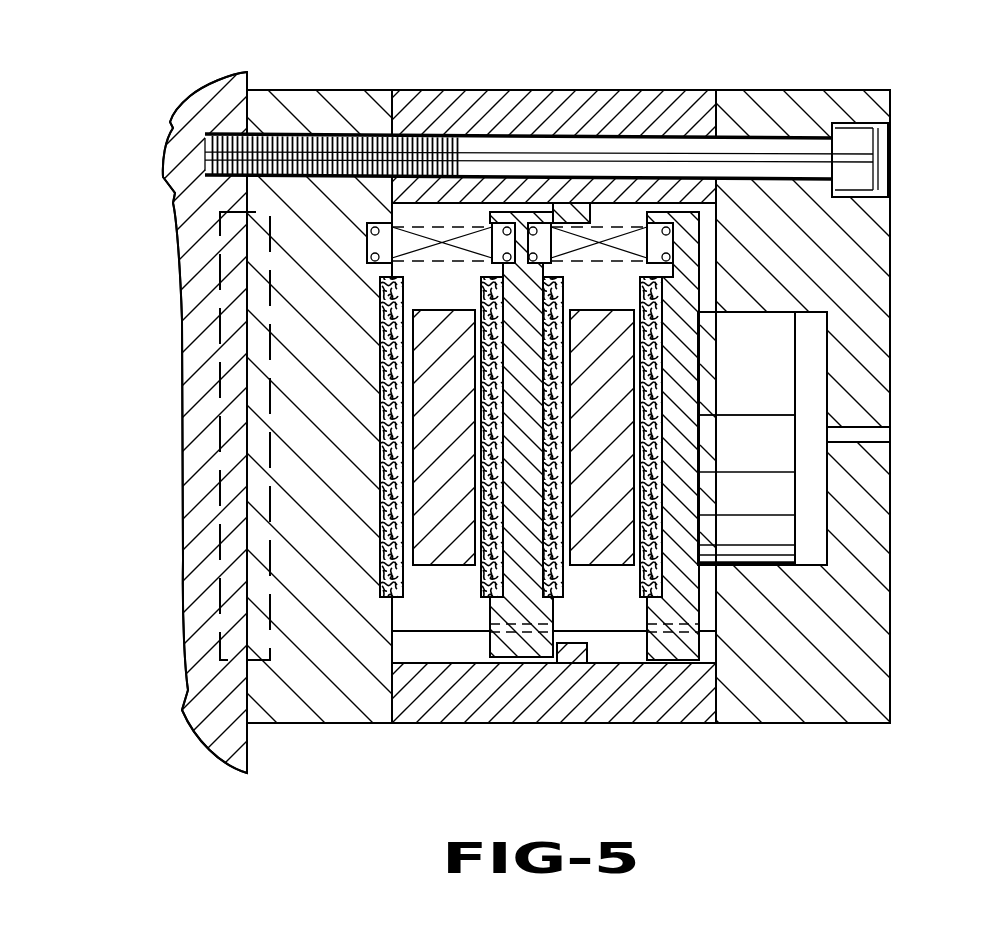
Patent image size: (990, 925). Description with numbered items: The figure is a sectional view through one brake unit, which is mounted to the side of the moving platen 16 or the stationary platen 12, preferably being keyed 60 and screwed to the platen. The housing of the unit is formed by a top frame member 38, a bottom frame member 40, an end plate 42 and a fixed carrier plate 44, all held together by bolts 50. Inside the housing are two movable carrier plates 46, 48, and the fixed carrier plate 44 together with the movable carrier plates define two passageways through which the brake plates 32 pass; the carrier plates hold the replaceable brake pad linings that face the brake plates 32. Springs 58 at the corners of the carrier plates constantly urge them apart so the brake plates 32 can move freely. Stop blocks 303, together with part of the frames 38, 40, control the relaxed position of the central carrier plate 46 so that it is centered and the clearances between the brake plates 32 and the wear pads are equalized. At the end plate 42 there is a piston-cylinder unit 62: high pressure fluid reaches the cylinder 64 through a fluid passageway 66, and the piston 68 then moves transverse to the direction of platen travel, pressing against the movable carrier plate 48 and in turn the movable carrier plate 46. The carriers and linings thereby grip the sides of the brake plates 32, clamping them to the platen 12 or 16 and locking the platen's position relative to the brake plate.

The stationary platen 12 is at (205, 210).
The moving platen 16 is at (205, 210).
The brake plates 32 is at (441, 546).
The top frame member 38 is at (695, 107).
The bottom frame member 40 is at (700, 712).
The end plate 42 is at (863, 677).
The fixed carrier plate 44 is at (342, 703).
The movable carrier plate 46 is at (520, 650).
The movable carrier plate 48 is at (675, 645).
The bolts 50 is at (855, 148).
The springs 58 is at (437, 236).
The key 60 is at (233, 625).
The piston-cylinder unit 62 is at (752, 497).
The cylinder 64 is at (813, 345).
The fluid passageway 66 is at (878, 435).
The piston 68 is at (755, 396).
The stop blocks 303 is at (594, 204).